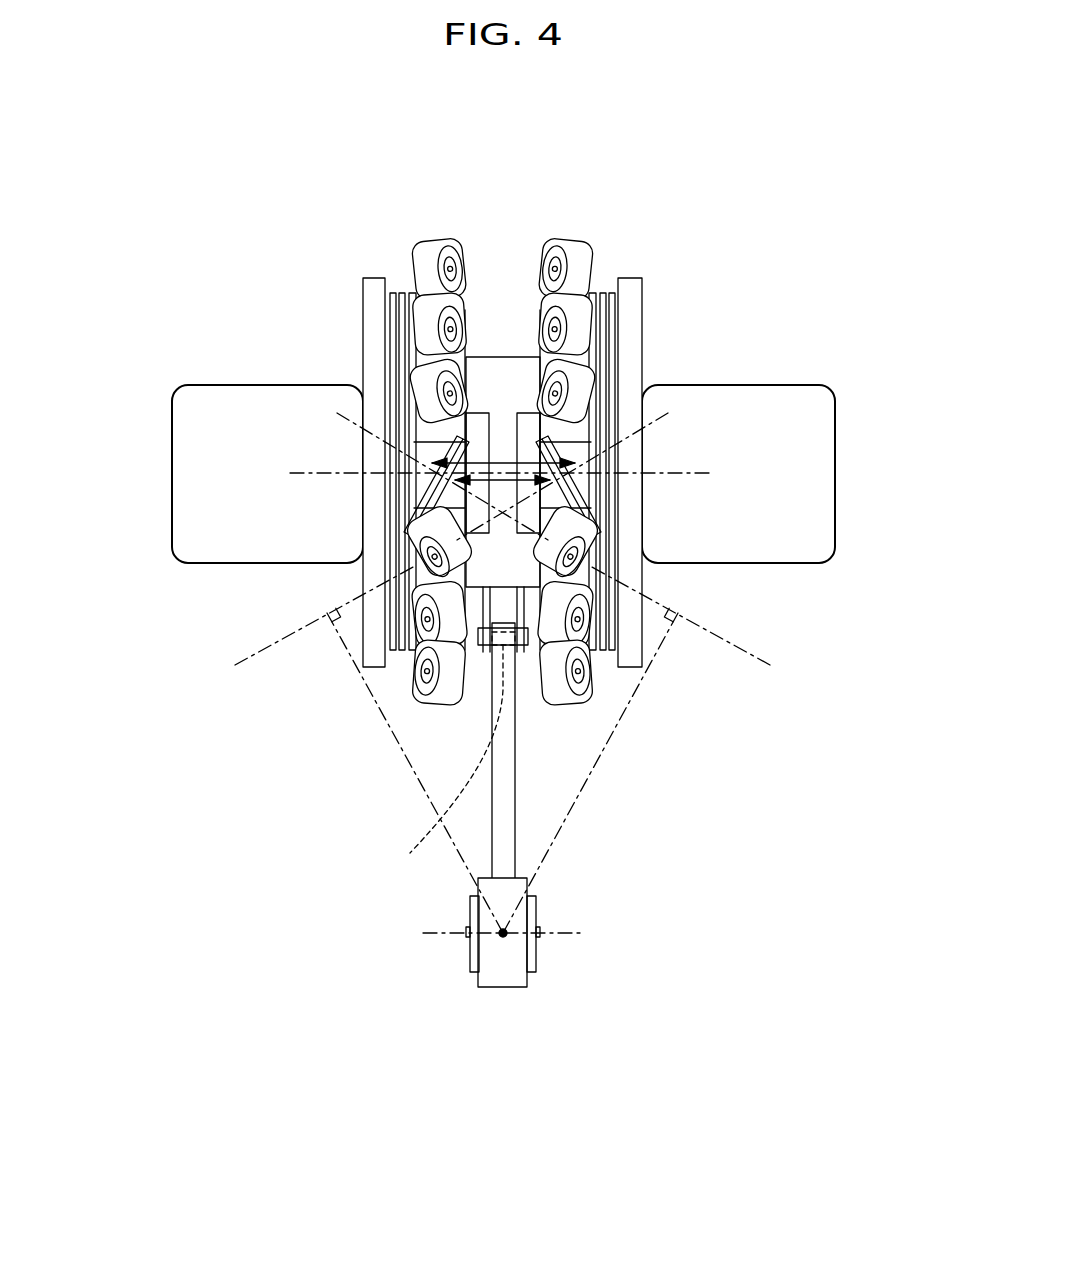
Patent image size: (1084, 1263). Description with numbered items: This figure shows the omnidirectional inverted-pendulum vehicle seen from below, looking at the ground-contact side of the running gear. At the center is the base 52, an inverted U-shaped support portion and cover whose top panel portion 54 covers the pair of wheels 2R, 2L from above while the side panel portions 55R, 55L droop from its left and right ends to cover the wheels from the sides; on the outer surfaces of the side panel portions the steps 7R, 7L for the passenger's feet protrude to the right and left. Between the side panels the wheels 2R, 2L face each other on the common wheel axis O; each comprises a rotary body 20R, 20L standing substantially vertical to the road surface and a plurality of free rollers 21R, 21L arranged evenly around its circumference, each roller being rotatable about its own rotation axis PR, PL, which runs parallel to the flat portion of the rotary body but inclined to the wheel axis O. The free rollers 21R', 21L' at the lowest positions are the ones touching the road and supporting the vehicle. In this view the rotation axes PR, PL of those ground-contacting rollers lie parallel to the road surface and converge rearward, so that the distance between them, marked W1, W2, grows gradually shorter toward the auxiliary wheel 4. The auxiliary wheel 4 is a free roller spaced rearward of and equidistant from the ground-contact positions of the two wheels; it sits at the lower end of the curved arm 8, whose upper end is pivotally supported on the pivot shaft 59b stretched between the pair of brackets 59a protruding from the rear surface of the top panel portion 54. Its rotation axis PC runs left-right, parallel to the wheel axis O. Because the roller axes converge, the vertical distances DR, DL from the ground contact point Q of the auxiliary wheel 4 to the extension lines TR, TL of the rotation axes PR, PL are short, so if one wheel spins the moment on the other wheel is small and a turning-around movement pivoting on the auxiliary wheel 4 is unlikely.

The base 52 is at (502, 388).
The side panel portion 55R is at (373, 278).
The side panel portion 55L is at (630, 278).
The top panel portion 54 is at (500, 357).
The free rollers 21R is at (370, 332).
The free rollers 21L is at (653, 332).
The free roller at lowest position 21R' is at (272, 491).
The free roller at lowest position 21L' is at (735, 491).
The rotary body 20R is at (412, 503).
The rotary body 20L is at (593, 503).
The step 7R is at (173, 460).
The step 7L is at (837, 460).
The wheel 2R is at (276, 500).
The wheel 2L is at (731, 500).
The brackets 59a is at (417, 707).
The pivot shaft 59b is at (440, 767).
The arm 8 is at (516, 808).
The auxiliary wheel 4 is at (497, 987).
The ground contact point Q is at (503, 940).
The rotation axis PC is at (567, 933).
The wheel axis O is at (697, 473).
The rotation axis PR is at (345, 405).
The rotation axis PL is at (660, 405).
The distance between rotation axes W1 is at (372, 640).
The distance between rotation axes W2 is at (478, 587).
The extension line TL is at (268, 650).
The extension line TR is at (737, 650).
The vertical distance DL is at (412, 778).
The vertical distance DR is at (590, 790).